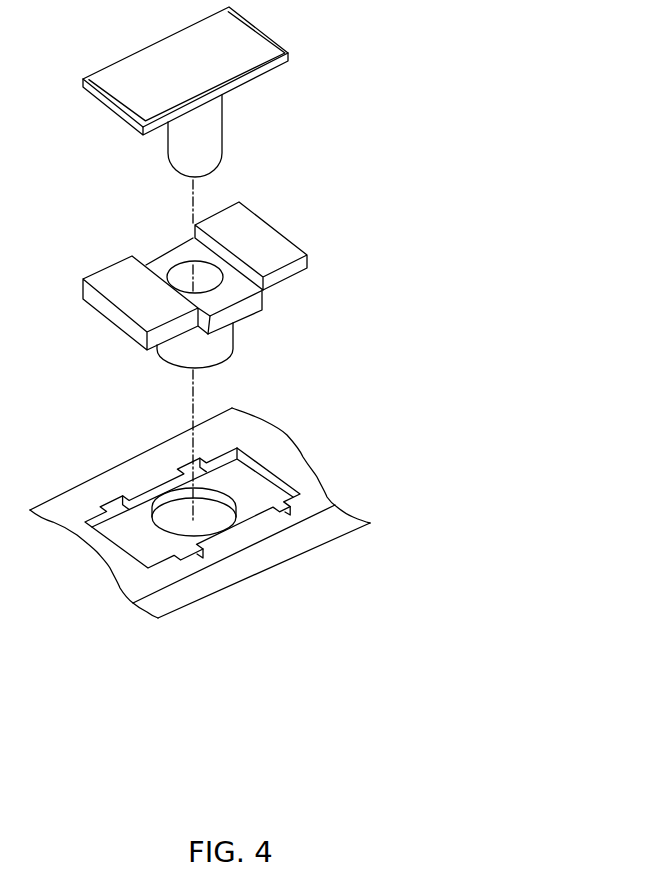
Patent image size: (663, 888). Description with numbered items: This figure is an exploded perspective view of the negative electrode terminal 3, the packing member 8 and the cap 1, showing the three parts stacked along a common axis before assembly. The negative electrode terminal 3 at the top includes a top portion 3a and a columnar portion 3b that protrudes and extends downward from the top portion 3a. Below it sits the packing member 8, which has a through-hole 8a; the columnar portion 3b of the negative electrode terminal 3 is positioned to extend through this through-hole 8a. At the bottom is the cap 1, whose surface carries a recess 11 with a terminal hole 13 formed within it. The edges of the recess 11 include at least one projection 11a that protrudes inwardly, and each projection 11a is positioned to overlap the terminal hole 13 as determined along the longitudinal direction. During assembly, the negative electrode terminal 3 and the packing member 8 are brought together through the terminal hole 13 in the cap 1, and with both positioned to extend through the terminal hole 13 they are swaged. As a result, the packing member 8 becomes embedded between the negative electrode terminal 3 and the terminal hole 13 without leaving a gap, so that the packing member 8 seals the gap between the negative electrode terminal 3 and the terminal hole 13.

The cap 1 is at (331, 534).
The negative electrode terminal 3 is at (225, 92).
The top portion 3a is at (252, 82).
The columnar portion 3b is at (207, 138).
The packing member 8 is at (225, 285).
The through-hole 8a is at (197, 275).
The recess 11 is at (176, 513).
The projection 11a is at (157, 485).
The terminal hole 13 is at (215, 476).